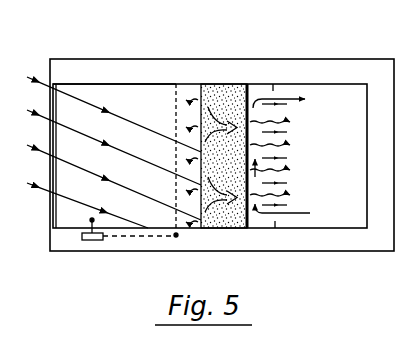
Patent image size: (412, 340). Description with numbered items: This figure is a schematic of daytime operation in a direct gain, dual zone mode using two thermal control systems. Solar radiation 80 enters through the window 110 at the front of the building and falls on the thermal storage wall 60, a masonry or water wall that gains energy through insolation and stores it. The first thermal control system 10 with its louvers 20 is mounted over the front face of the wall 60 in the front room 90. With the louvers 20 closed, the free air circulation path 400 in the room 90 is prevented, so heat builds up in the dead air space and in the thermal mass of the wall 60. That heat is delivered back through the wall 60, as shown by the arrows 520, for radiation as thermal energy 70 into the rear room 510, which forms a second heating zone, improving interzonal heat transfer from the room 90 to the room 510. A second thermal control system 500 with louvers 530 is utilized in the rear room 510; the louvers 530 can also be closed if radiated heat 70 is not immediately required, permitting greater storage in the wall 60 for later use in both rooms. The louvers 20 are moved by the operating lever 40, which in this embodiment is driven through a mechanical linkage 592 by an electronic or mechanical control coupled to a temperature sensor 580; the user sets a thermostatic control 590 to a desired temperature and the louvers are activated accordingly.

The thermal control system 10 is at (183, 77).
The louvers 20 is at (176, 97).
The operating lever 40 is at (176, 237).
The thermal storage wall 60 is at (238, 105).
The thermal energy 70 is at (193, 97).
The solar radiation 80 is at (140, 187).
The front room 90 is at (153, 107).
The window 110 is at (53, 210).
The free air circulation path 400 is at (290, 98).
The second thermal control system 500 is at (289, 58).
The rear room 510 is at (358, 148).
The arrows 520 is at (228, 115).
The louvers 530 is at (280, 108).
The temperature sensor 580 is at (90, 220).
The thermostatic control 590 is at (84, 240).
The mechanical linkage 592 is at (120, 238).